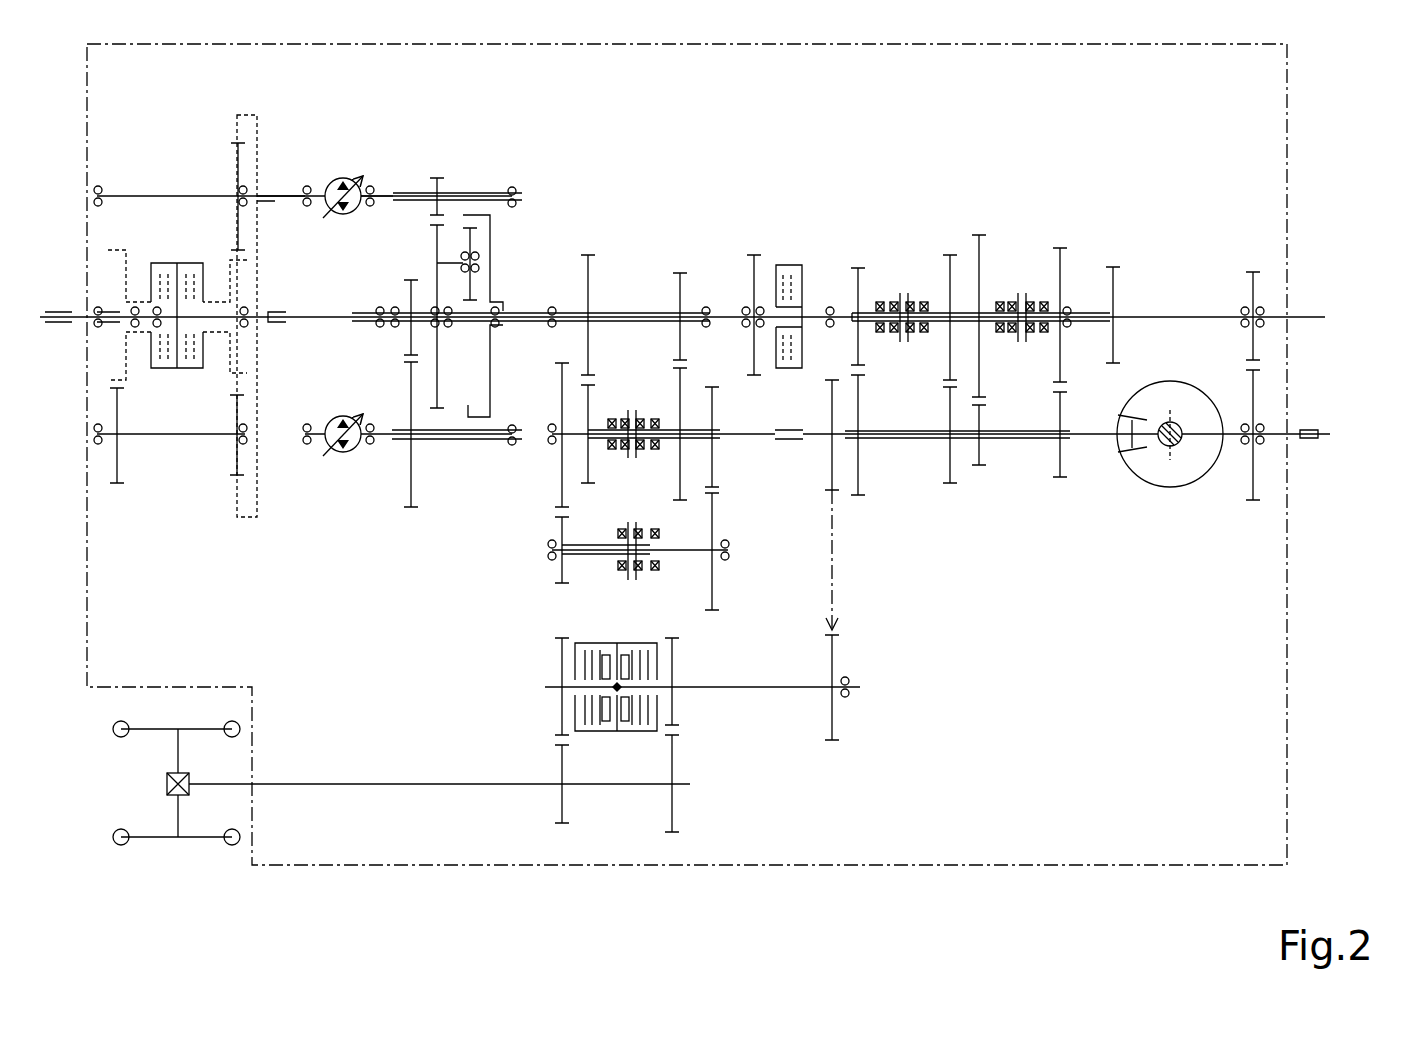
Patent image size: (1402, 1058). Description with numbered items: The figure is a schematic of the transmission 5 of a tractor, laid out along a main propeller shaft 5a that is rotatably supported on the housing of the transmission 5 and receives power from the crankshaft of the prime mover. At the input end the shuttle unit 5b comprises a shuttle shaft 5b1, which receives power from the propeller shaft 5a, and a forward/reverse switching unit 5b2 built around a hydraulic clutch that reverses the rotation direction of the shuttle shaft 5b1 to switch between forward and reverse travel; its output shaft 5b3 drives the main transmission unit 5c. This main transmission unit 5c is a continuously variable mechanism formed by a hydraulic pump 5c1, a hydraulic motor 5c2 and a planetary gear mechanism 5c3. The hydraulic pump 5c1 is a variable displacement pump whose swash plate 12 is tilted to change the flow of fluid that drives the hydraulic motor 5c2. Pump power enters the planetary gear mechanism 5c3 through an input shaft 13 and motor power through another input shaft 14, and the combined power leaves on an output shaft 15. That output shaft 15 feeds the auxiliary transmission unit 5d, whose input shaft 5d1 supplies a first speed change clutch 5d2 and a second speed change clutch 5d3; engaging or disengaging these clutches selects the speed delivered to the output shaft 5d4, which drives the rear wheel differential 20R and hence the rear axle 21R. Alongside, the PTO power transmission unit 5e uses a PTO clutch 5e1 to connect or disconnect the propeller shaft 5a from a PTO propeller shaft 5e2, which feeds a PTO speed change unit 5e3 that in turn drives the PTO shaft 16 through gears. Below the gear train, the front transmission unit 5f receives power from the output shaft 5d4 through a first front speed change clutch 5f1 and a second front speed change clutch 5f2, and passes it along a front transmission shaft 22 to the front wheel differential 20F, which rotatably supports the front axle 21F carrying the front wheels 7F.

The transmission 5 is at (1287, 110).
The propeller shaft 5a is at (82, 305).
The shuttle unit 5b is at (165, 162).
The shuttle shaft 5b1 is at (113, 318).
The forward/reverse switching unit 5b2 is at (178, 262).
The output shaft 5b3 is at (260, 195).
The main transmission unit 5c is at (466, 180).
The hydraulic pump 5c1 is at (352, 178).
The hydraulic motor 5c2 is at (351, 452).
The planetary gear mechanism 5c3 is at (495, 247).
The auxiliary transmission unit 5d is at (626, 292).
The input shaft 5d1 is at (635, 323).
The first speed change clutch 5d2 is at (688, 458).
The second speed change clutch 5d3 is at (668, 562).
The output shaft 5d4 is at (749, 434).
The PTO power transmission unit 5e is at (786, 262).
The PTO clutch 5e1 is at (910, 280).
The PTO propeller shaft 5e2 is at (838, 310).
The PTO speed change unit 5e3 is at (1023, 282).
The front transmission unit 5f is at (683, 718).
The first front speed change clutch 5f1 is at (612, 636).
The second front speed change clutch 5f2 is at (602, 736).
The front wheels 7F is at (121, 721).
The swash plate 12 is at (355, 212).
The input shaft 13 is at (492, 192).
The input shaft 14 is at (452, 442).
The output shaft 15 is at (530, 330).
The PTO shaft 16 is at (1275, 440).
The front wheel differential 20F is at (166, 783).
The rear wheel differential 20R is at (1165, 487).
The front axle 21F is at (178, 822).
The rear axle 21R is at (1172, 420).
The front transmission shaft 22 is at (360, 782).